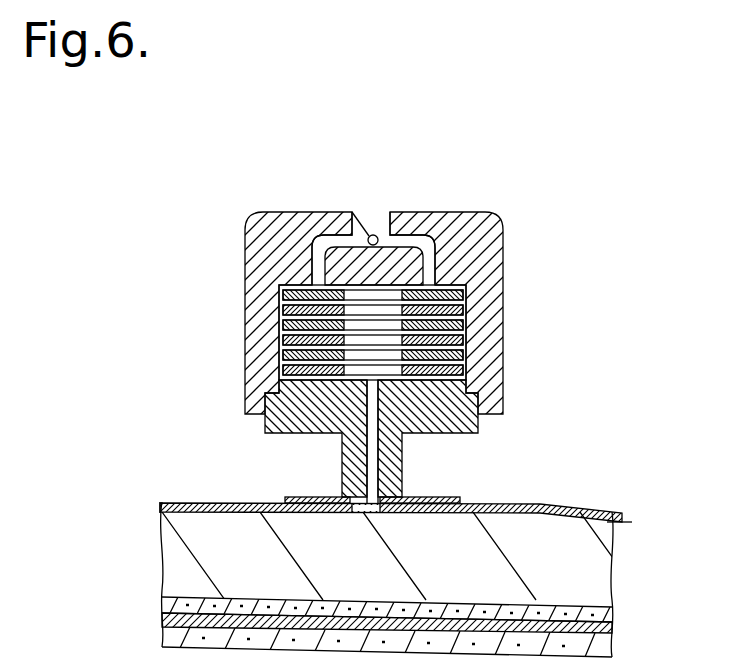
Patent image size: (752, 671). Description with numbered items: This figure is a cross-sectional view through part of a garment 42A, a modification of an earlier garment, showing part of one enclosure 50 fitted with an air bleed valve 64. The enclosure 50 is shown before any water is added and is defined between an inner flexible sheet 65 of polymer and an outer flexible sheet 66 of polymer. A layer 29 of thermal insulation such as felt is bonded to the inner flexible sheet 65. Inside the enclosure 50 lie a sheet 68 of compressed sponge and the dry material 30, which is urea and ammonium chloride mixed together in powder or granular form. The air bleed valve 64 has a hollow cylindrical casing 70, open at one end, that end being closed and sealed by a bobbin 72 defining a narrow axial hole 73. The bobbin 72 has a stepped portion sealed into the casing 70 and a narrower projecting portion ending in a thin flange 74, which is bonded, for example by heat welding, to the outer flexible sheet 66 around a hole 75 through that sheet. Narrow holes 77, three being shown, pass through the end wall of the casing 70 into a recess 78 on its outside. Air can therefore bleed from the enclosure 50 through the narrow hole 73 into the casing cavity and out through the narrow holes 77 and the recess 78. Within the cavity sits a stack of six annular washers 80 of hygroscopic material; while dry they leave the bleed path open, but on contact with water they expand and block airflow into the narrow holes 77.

The garment 42A is at (602, 355).
The air bleed valve 64 is at (510, 213).
The hollow cylindrical casing 70 is at (255, 293).
The narrow holes 77 is at (330, 245).
The recess 78 is at (383, 222).
The annular washers 80 is at (466, 366).
The bobbin 72 is at (452, 408).
The narrow axial hole 73 is at (373, 448).
The thin flange 74 is at (298, 500).
The hole 75 is at (380, 498).
The enclosure 50 is at (562, 512).
The outer flexible sheet 66 is at (160, 508).
The dry material 30 is at (562, 573).
The sheet of compressed sponge 68 is at (597, 615).
The inner flexible sheet 65 is at (168, 620).
The layer of thermal insulation 29 is at (583, 650).